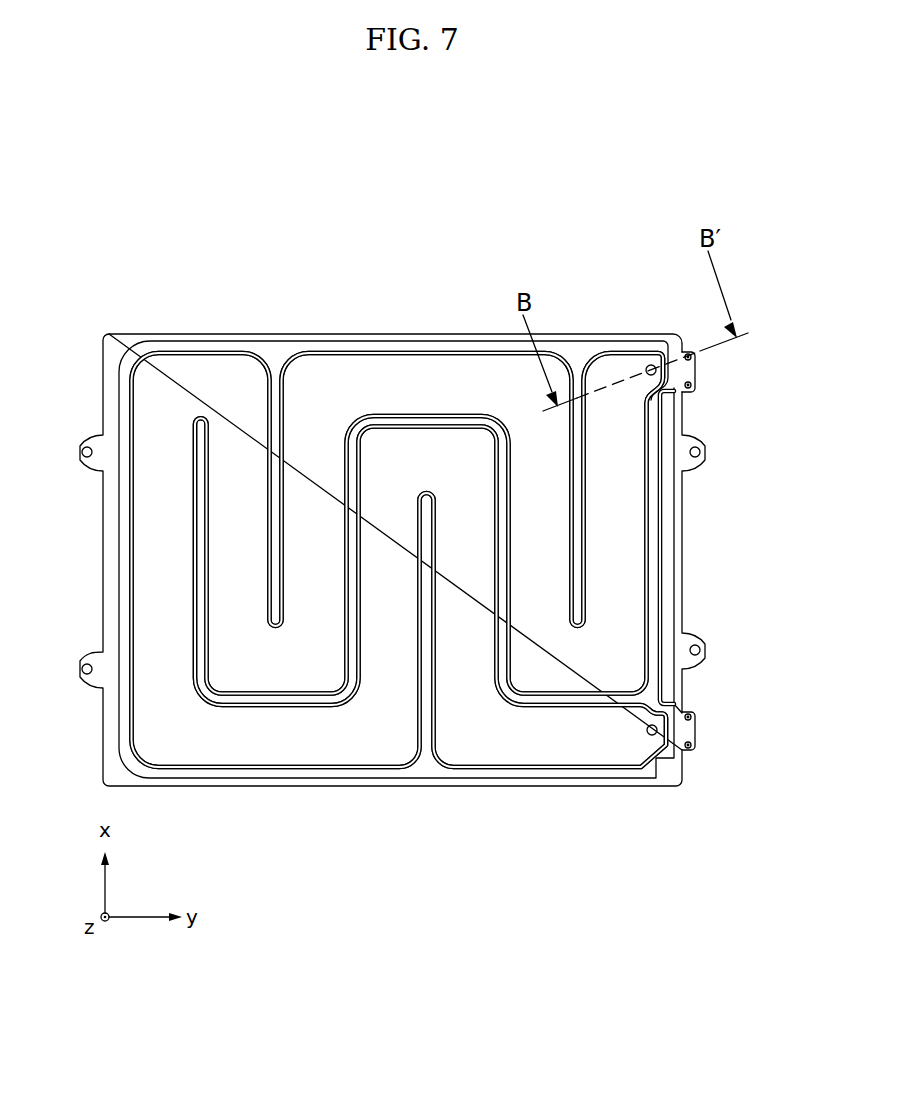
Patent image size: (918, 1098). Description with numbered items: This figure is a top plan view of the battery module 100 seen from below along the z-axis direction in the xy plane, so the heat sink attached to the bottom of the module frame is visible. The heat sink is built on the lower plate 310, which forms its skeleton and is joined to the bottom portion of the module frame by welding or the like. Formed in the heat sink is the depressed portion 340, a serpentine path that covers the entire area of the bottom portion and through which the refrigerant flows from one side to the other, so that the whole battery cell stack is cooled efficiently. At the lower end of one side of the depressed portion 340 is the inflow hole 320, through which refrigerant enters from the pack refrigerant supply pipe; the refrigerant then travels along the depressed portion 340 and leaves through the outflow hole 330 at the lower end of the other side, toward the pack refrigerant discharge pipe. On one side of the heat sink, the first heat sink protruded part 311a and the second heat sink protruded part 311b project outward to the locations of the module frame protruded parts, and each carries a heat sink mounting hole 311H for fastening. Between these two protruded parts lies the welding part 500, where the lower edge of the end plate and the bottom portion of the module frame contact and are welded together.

The battery module 100 is at (389, 207).
The lower plate 310 is at (272, 360).
The depressed portion 340 is at (408, 387).
The inflow hole 320 is at (648, 368).
The outflow hole 330 is at (645, 731).
The first heat sink protruded part 311a is at (682, 388).
The second heat sink protruded part 311b is at (680, 719).
The heat sink mounting hole 311H is at (692, 357).
The welding part 500 is at (674, 536).